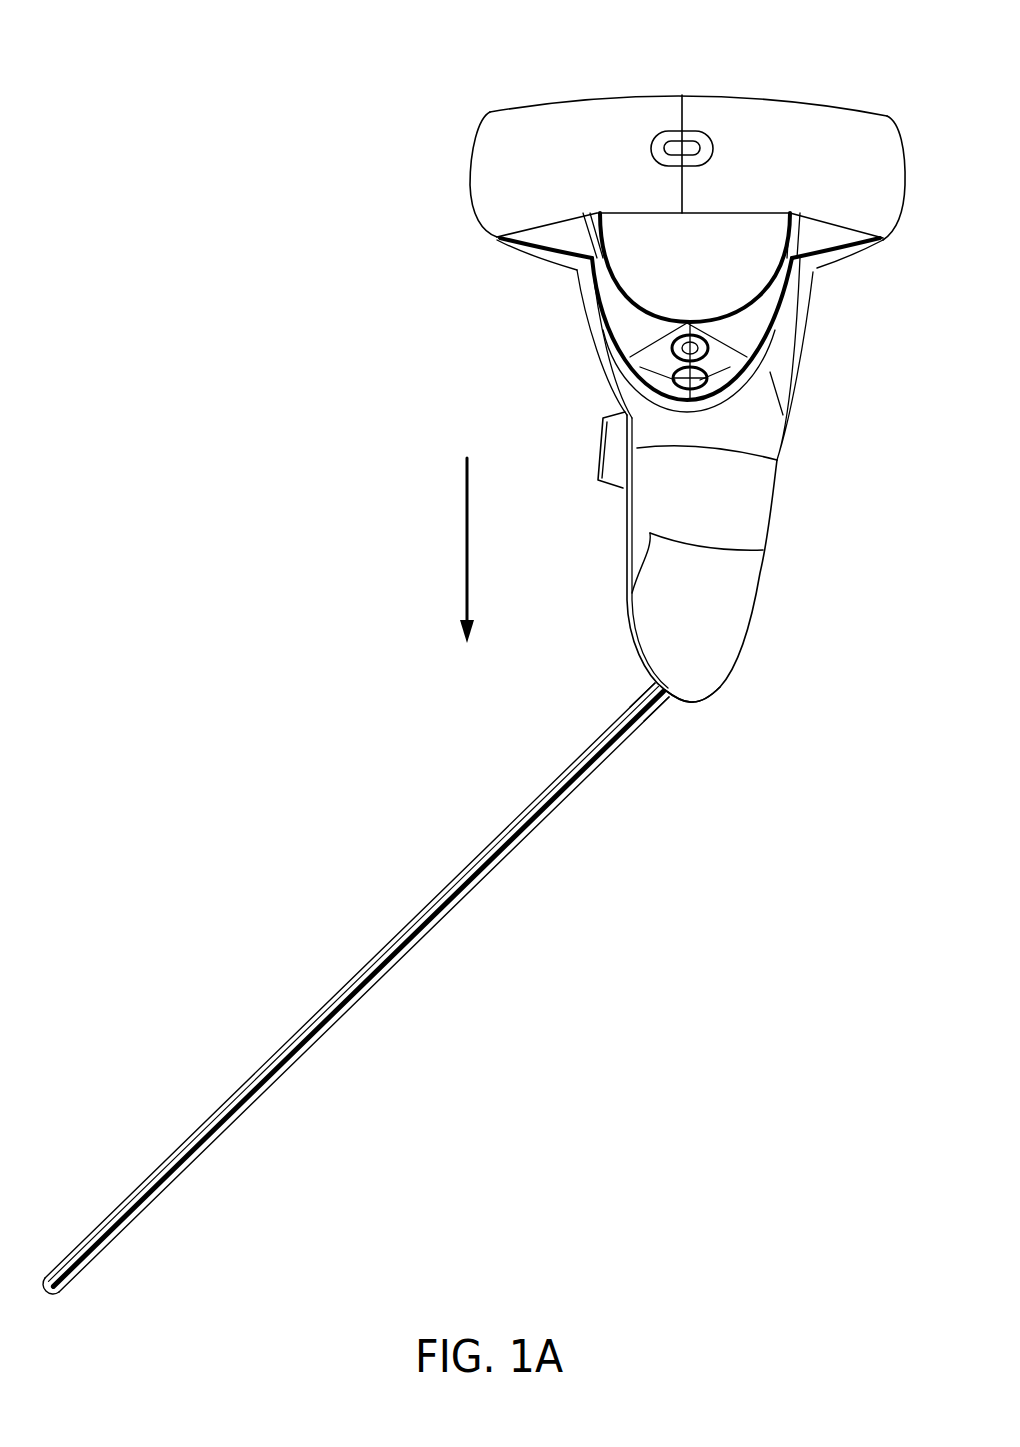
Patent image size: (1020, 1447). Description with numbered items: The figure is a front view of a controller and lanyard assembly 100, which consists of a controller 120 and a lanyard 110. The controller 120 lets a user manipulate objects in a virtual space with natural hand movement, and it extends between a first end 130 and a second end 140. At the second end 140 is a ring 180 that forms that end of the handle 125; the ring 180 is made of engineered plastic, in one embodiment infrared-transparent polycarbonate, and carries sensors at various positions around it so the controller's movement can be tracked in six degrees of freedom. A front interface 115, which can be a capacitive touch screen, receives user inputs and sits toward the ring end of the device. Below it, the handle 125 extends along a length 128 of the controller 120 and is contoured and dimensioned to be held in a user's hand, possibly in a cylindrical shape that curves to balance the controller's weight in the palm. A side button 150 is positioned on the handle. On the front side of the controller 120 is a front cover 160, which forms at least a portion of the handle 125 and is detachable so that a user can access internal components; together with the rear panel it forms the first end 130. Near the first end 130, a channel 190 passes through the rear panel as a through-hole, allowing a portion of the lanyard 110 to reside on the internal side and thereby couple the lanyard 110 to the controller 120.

The controller and lanyard assembly 100 is at (68, 90).
The lanyard 110 is at (202, 1115).
The front interface 115 is at (762, 280).
The controller 120 is at (480, 203).
The handle 125 is at (637, 592).
The length 128 is at (457, 558).
The first end 130 is at (693, 707).
The second end 140 is at (652, 110).
The side button 150 is at (602, 445).
The front cover 160 is at (760, 573).
The ring 180 is at (724, 148).
The channel 190 is at (655, 682).